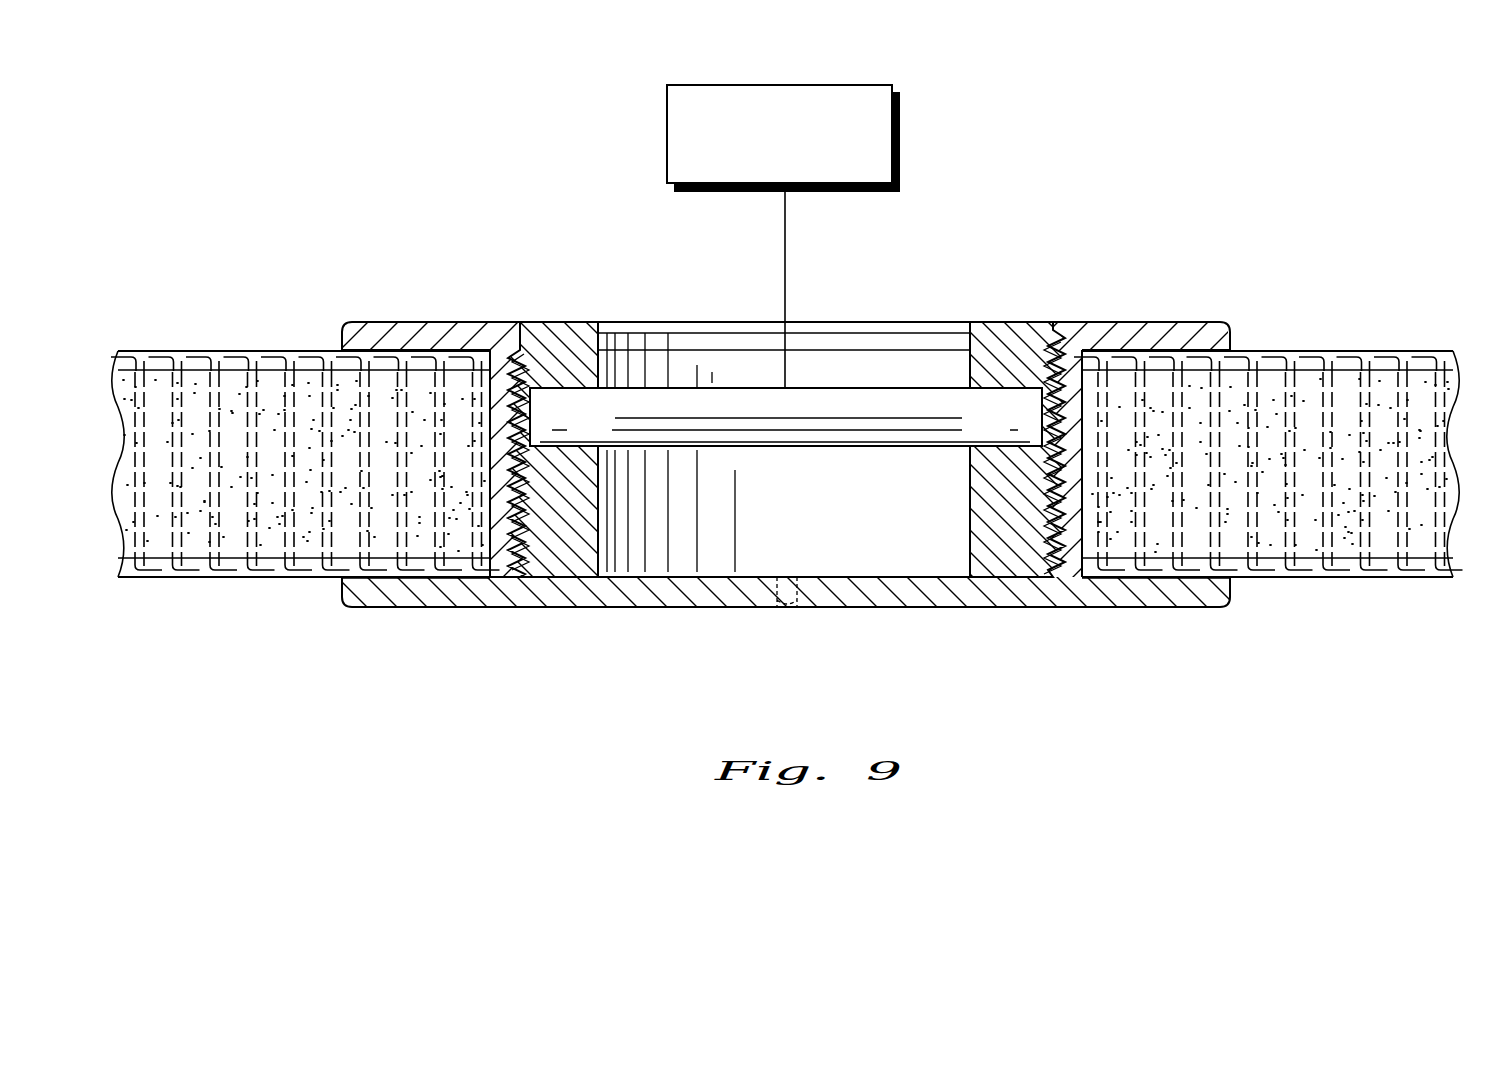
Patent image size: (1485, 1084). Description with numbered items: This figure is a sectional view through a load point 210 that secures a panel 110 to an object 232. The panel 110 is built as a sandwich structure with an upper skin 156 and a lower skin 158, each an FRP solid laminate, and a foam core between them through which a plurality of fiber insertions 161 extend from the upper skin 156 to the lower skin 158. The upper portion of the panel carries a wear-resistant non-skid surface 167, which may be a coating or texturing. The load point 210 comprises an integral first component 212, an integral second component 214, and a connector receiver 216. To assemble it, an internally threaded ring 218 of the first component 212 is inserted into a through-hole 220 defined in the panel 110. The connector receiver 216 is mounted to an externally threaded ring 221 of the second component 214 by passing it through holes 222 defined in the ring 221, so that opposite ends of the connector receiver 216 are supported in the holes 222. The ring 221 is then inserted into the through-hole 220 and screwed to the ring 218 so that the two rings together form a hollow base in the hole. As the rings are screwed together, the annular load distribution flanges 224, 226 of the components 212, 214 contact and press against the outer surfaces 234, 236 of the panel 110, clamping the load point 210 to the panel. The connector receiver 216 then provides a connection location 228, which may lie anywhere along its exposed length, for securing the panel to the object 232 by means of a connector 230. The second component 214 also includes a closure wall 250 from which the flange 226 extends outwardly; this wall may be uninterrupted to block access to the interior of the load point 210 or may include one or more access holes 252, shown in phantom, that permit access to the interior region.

The panel 110 is at (1322, 338).
The upper skin 156 is at (183, 352).
The lower skin 158 is at (148, 578).
The fiber insertions 161 is at (1372, 505).
The non-skid surface 167 is at (215, 352).
The load point 210 is at (1082, 288).
The first component 212 is at (775, 409).
The second component 214 is at (786, 481).
The connector receiver 216 is at (796, 436).
The internally threaded ring 218 is at (503, 555).
The through-hole 220 is at (492, 410).
The externally threaded ring 221 is at (978, 496).
The holes 222 is at (786, 443).
The annular load distribution flange 224 is at (370, 334).
The annular load distribution flange 226 is at (415, 607).
The connection location 228 is at (788, 383).
The connector 230 is at (786, 266).
The object 232 is at (666, 122).
The outer surface 234 is at (258, 352).
The outer surface 236 is at (224, 578).
The closure wall 250 is at (862, 607).
The access hole 252 is at (787, 612).